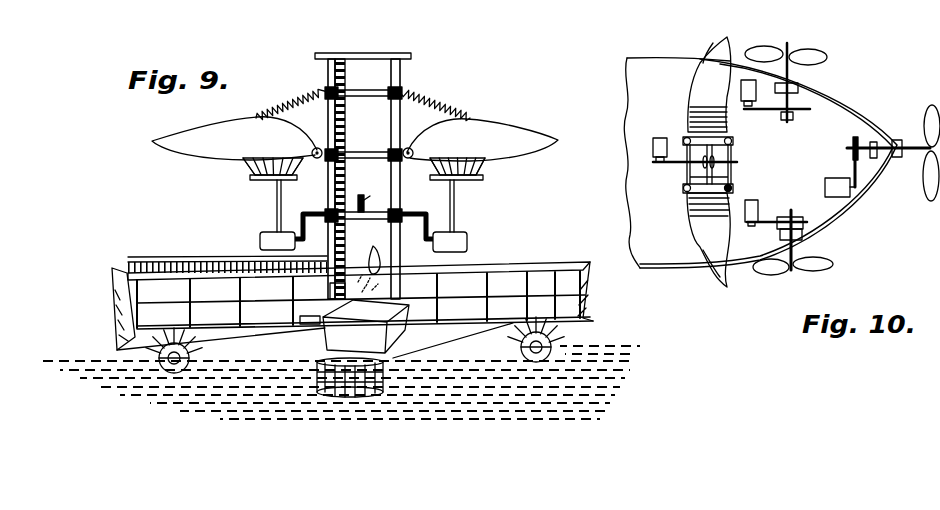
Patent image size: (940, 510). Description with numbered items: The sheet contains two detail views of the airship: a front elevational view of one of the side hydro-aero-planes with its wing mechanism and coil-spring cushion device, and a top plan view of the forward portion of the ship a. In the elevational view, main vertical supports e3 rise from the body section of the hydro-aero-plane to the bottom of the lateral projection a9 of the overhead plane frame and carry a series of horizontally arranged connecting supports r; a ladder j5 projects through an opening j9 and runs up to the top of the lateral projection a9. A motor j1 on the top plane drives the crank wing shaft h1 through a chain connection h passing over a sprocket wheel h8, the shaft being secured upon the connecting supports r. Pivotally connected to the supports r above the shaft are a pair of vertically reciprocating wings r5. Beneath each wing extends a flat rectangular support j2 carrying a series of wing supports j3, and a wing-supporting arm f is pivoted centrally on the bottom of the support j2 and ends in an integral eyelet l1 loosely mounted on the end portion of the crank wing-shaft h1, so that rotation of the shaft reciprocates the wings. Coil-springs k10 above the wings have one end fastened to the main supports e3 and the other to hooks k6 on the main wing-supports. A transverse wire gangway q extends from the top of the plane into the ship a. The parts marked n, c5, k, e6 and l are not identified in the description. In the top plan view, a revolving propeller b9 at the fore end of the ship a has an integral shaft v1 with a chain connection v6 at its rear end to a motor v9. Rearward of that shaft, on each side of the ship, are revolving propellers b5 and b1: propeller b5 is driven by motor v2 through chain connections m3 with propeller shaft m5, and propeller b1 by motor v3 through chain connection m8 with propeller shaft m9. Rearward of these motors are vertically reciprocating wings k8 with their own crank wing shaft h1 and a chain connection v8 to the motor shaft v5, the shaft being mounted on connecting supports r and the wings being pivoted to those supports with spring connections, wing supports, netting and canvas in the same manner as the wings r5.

In FIG. 9, the lateral projection a9 is at (372, 52).
In FIG. 9, the main vertical support e3 is at (328, 72).
In FIG. 10, the main vertical support e3 is at (664, 207).
In FIG. 9, the ladder j5 is at (347, 142).
In FIG. 9, the connecting support r is at (365, 142).
In FIG. 10, the connecting support r is at (735, 163).
In FIG. 9, the coil-spring k10 is at (270, 100).
In FIG. 9, the hook k6 is at (252, 120).
In FIG. 9, the vertically reciprocating wing r5 is at (165, 150).
In FIG. 9, the flat rectangular support j2 is at (248, 179).
In FIG. 9, the wing support j3 is at (483, 171).
In FIG. 9, the wing-supporting arm f is at (455, 200).
In FIG. 9, the integral eyelet l1 is at (266, 234).
In FIG. 9, the sprocket wheel h8 is at (355, 196).
In FIG. 9, the chain connection h is at (364, 200).
In FIG. 9, the motor j1 is at (350, 237).
In FIG. 9, the nozzle n is at (376, 249).
In FIG. 9, the transverse wire gang-way q is at (188, 257).
In FIG. 9, the deck c5 is at (538, 264).
In FIG. 9, the wheel k is at (195, 348).
In FIG. 9, the cabin / bucket e6 is at (363, 336).
In FIG. 9, the opening j9 is at (330, 289).
In FIG. 9, the motor box l is at (310, 312).
In FIG. 10, the ship a is at (866, 109).
In FIG. 10, the vertically reciprocating wing k8 is at (688, 87).
In FIG. 10, the crank wing shaft h1 is at (733, 188).
In FIG. 10, the chain connection v8 is at (657, 180).
In FIG. 10, the motor shaft v5 is at (655, 138).
In FIG. 10, the motor v3 is at (775, 108).
In FIG. 10, the revolving propeller b1 is at (828, 57).
In FIG. 10, the chain connection m8 is at (805, 109).
In FIG. 10, the propeller shaft m9 is at (789, 120).
In FIG. 10, the revolving propeller b9 is at (923, 197).
In FIG. 10, the shaft v1 is at (847, 149).
In FIG. 10, the chain connection v6 is at (858, 172).
In FIG. 10, the motor v9 is at (829, 180).
In FIG. 10, the motor v2 is at (758, 204).
In FIG. 10, the chain connection m3 is at (756, 226).
In FIG. 10, the propeller shaft m5 is at (792, 212).
In FIG. 10, the revolving propeller b5 is at (832, 266).